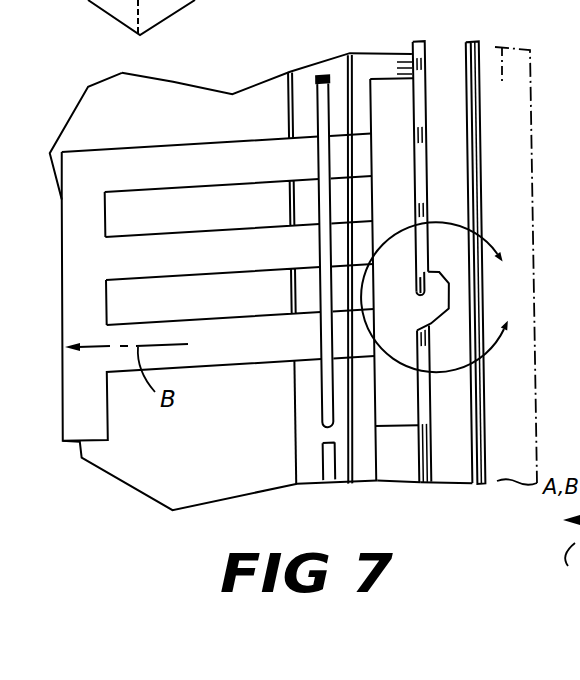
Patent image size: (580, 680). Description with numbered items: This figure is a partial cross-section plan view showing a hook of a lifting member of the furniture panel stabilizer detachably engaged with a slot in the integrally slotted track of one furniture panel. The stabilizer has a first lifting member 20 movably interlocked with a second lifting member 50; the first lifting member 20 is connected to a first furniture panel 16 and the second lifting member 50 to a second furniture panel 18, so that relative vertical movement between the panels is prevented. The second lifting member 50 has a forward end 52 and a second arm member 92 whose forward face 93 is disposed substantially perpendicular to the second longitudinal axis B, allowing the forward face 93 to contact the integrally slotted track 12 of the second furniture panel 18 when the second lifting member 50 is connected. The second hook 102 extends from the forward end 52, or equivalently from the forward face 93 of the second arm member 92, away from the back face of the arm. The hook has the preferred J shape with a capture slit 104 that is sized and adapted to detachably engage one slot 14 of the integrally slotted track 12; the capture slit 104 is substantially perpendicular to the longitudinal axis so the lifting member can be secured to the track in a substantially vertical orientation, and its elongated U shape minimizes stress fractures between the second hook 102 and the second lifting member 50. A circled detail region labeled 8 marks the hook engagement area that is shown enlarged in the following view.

The integrally slotted track 12 is at (448, 128).
The slot 14 is at (415, 168).
The first furniture panel 16 is at (177, 482).
The second furniture panel 18 is at (500, 47).
The first lifting member 20 is at (322, 76).
The second lifting member 50 is at (72, 422).
The forward end 52 is at (417, 84).
The second arm member 92 is at (393, 410).
The forward face 93 is at (425, 110).
The second hook 102 is at (442, 284).
The capture slit 104 is at (416, 282).
The detail circle FIG. 8 is at (438, 297).